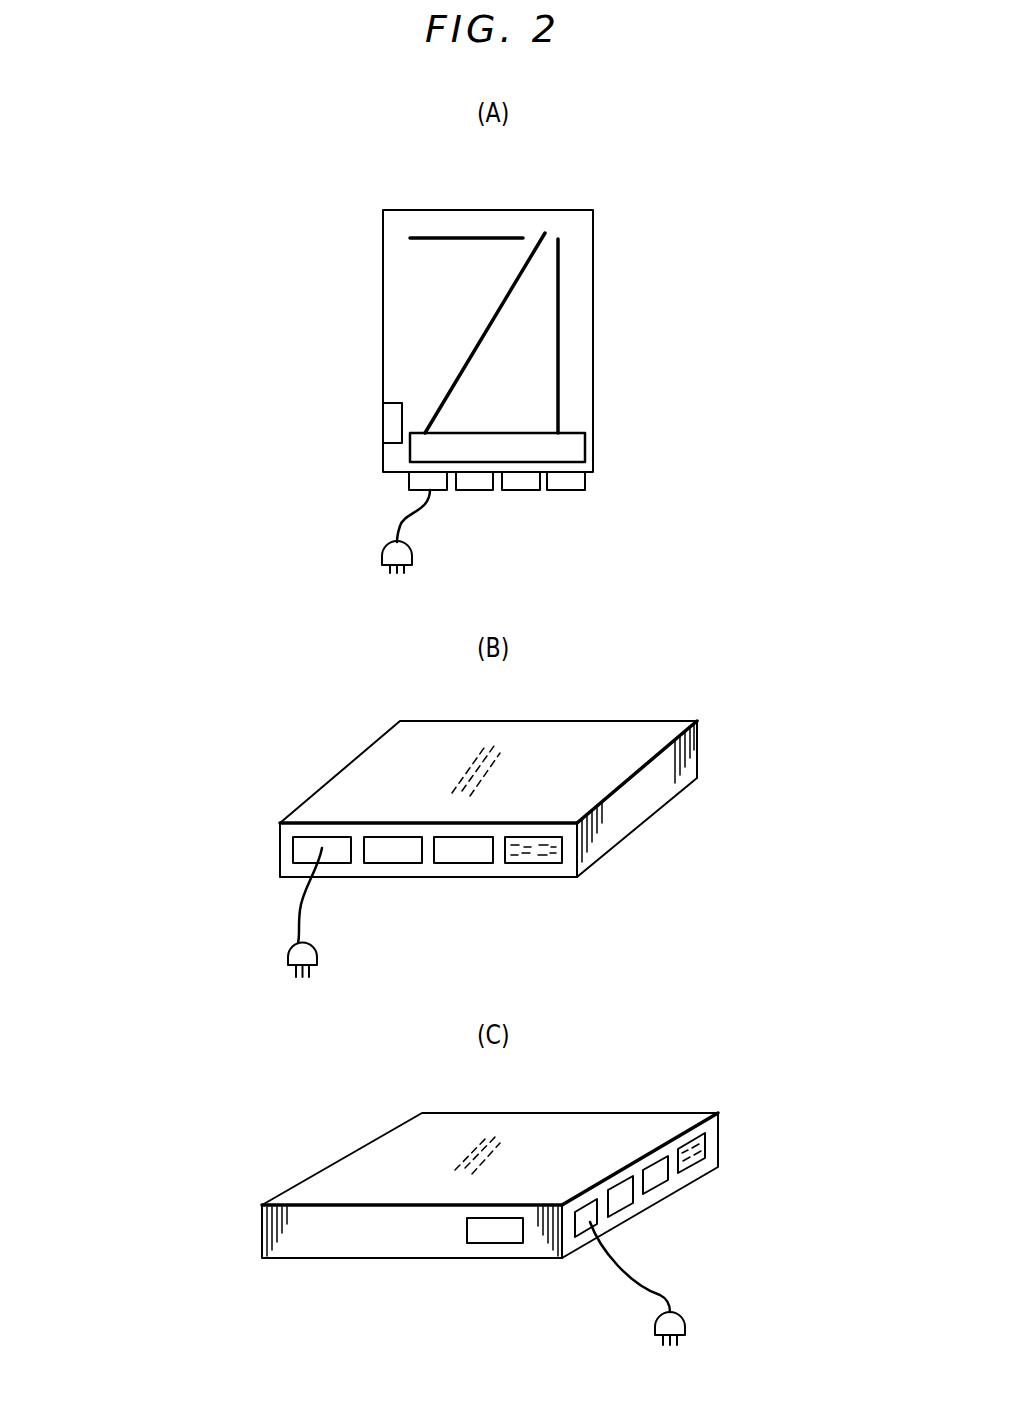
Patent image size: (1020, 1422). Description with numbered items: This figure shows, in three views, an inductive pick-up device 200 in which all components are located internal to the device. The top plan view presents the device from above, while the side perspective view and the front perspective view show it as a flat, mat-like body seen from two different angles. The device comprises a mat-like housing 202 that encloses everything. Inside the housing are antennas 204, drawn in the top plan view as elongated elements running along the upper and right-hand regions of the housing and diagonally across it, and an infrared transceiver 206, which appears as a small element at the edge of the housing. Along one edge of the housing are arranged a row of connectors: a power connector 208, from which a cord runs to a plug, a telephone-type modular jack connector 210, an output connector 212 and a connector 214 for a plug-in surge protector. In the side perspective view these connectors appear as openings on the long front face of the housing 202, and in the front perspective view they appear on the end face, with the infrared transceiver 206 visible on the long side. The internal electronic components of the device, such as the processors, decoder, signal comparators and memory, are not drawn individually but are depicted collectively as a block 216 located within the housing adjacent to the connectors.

In FIG. 2A, the inductive pick-up device 200 is at (338, 249).
In FIG. 2B, the inductive pick-up device 200 is at (550, 720).
In FIG. 2C, the inductive pick-up device 200 is at (572, 1112).
In FIG. 2A, the mat-like housing 202 is at (491, 210).
In FIG. 2B, the mat-like housing 202 is at (640, 829).
In FIG. 2C, the mat-like housing 202 is at (405, 1260).
In FIG. 2A, the antennas 204 is at (553, 221).
In FIG. 2A, the infrared transceiver 206 is at (382, 427).
In FIG. 2C, the infrared transceiver 206 is at (493, 1245).
In FIG. 2A, the power connector 208 is at (380, 554).
In FIG. 2B, the power connector 208 is at (287, 955).
In FIG. 2C, the power connector 208 is at (653, 1326).
In FIG. 2A, the RJ-11 connector 210 is at (474, 491).
In FIG. 2B, the RJ-11 connector 210 is at (390, 864).
In FIG. 2C, the RJ-11 connector 210 is at (622, 1214).
In FIG. 2A, the output connector 212 is at (520, 491).
In FIG. 2B, the output connector 212 is at (459, 864).
In FIG. 2C, the output connector 212 is at (657, 1193).
In FIG. 2A, the connector for a plug-in surge protector 214 is at (565, 491).
In FIG. 2B, the connector for a plug-in surge protector 214 is at (532, 864).
In FIG. 2C, the connector for a plug-in surge protector 214 is at (694, 1171).
In FIG. 2A, the block representing internal electronic components 216 is at (586, 447).